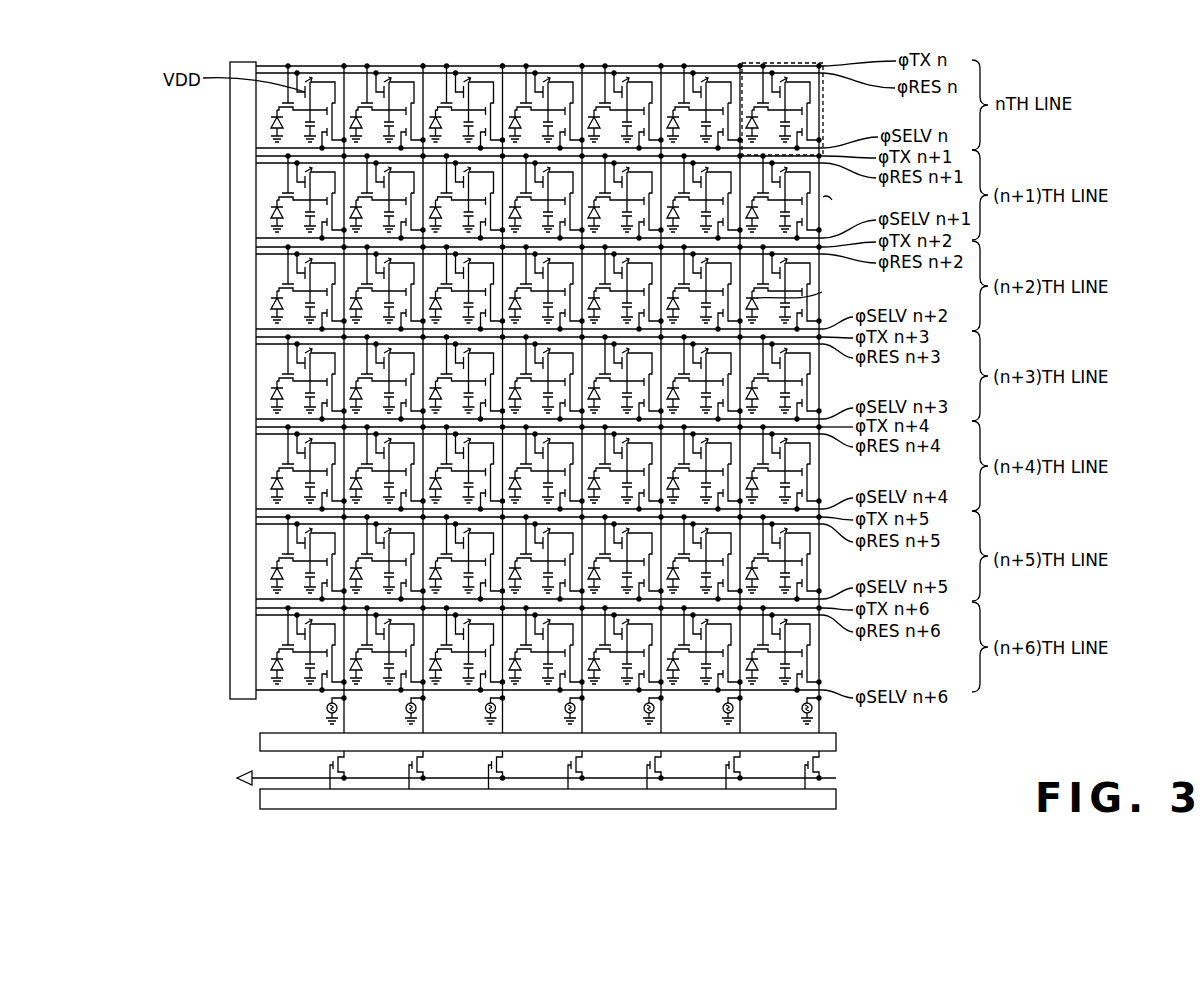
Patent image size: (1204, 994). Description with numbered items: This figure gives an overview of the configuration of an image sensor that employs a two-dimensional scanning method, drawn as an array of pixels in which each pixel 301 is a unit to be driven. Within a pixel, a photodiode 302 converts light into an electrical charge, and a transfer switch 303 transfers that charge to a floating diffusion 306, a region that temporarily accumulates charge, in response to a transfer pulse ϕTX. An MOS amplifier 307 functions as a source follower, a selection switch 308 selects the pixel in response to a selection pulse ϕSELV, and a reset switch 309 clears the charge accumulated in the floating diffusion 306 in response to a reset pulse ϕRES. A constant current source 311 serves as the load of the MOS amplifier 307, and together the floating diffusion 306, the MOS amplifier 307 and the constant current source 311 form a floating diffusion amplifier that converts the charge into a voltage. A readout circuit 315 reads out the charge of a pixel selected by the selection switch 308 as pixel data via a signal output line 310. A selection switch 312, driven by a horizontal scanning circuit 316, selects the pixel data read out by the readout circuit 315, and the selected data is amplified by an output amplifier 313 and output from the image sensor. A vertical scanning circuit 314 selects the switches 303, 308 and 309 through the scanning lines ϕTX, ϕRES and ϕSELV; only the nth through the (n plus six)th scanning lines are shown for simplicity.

The pixel 301 is at (737, 83).
The photodiode 302 is at (804, 288).
The transfer switch 303 is at (750, 100).
The floating diffusion 306 is at (786, 399).
The MOS amplifier 307 is at (808, 112).
The selection switch 308 is at (808, 131).
The reset switch 309 is at (790, 98).
The signal output line 310 is at (842, 203).
The constant current source 311 is at (802, 708).
The selection switch 312 is at (822, 766).
The output amplifier 313 is at (250, 786).
The vertical scanning circuit 314 is at (245, 254).
The readout circuit 315 is at (836, 740).
The horizontal scanning circuit 316 is at (836, 798).